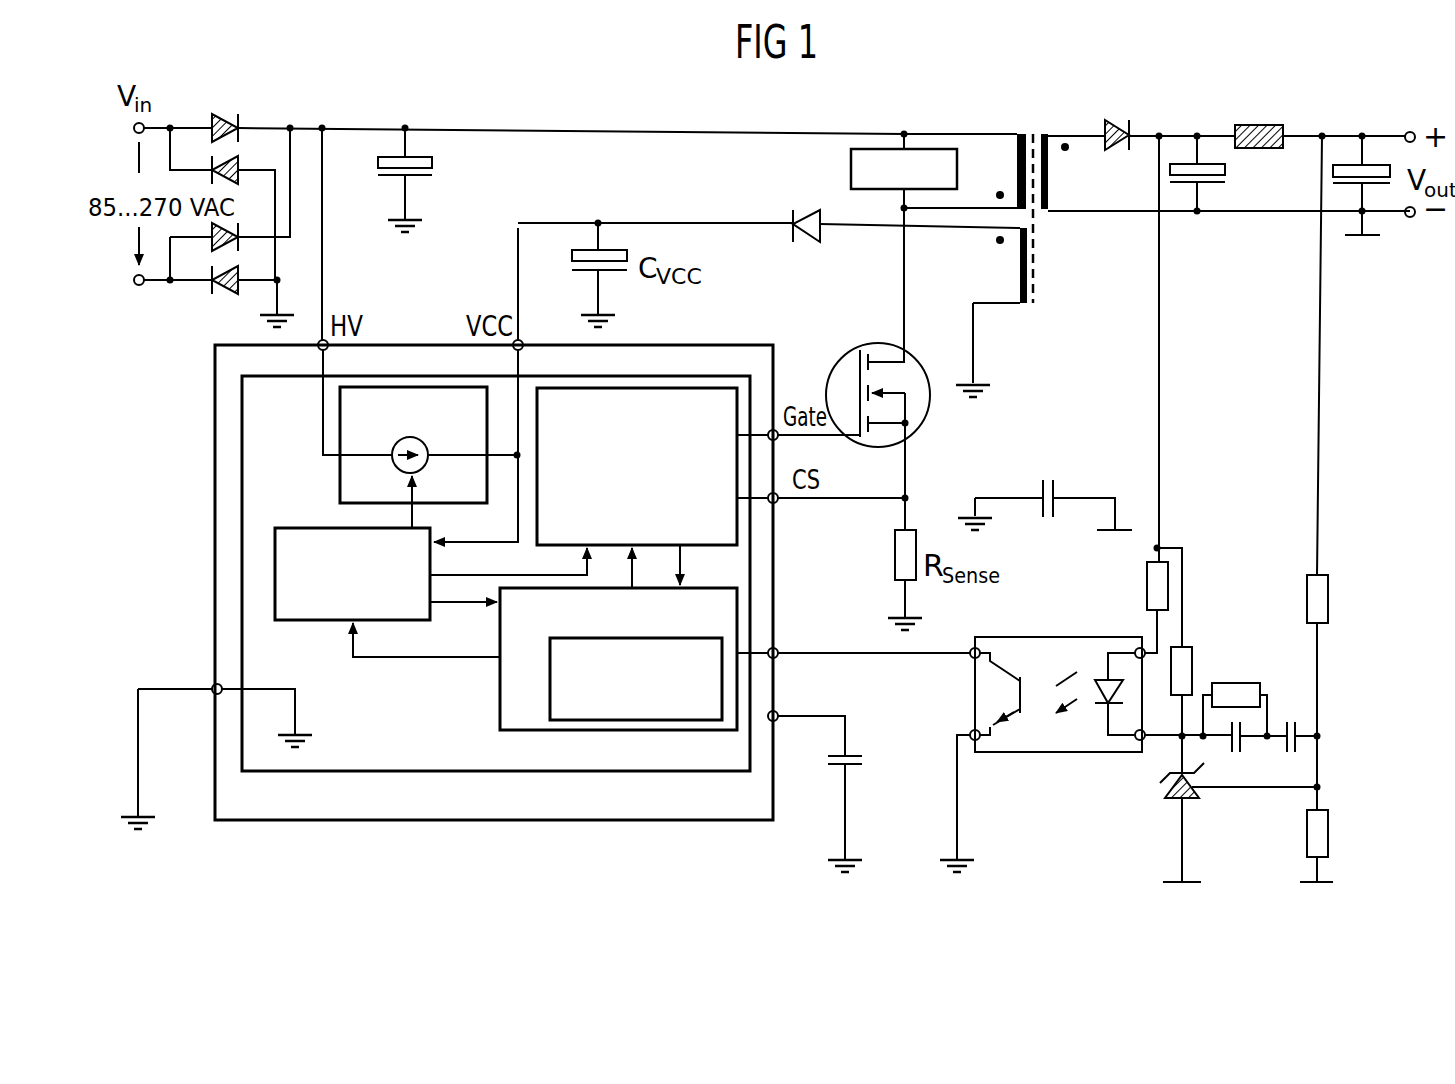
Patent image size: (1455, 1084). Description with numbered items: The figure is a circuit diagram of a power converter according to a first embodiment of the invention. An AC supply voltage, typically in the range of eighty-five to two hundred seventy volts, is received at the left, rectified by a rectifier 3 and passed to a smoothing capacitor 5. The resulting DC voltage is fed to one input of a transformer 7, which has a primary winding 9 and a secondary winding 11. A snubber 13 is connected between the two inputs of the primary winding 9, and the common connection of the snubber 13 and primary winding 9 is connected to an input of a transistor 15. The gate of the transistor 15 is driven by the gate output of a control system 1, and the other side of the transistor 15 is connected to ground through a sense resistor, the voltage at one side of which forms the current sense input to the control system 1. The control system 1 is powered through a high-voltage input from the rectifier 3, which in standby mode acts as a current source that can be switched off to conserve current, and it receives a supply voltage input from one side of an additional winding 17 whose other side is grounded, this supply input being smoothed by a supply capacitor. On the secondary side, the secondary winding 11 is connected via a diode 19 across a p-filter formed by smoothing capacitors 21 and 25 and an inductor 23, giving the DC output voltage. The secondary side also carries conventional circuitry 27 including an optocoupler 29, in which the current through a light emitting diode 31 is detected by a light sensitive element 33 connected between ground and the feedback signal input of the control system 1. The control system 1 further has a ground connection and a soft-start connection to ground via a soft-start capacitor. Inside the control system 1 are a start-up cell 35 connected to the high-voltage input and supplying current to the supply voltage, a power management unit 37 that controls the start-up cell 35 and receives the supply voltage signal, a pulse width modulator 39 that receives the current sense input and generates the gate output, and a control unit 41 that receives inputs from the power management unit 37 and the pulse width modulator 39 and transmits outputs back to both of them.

The control system 1 is at (521, 608).
The rectifier 3 is at (237, 101).
The smoothing capacitor 5 is at (452, 168).
The transformer 7 is at (1157, 222).
The primary winding 9 is at (1017, 151).
The secondary winding 11 is at (1050, 188).
The snubber 13 is at (851, 168).
The transistor 15 is at (913, 432).
The additional winding 17 is at (1020, 271).
The diode 19 is at (1117, 123).
The smoothing capacitor 21 is at (1226, 178).
The inductor 23 is at (1260, 124).
The smoothing capacitor 25 is at (1378, 165).
The circuitry 27 is at (1339, 716).
The optocoupler 29 is at (961, 731).
The light emitting diode 31 is at (1102, 677).
The light sensitive element 33 is at (1020, 700).
The start-up cell 35 is at (340, 478).
The power management unit 37 is at (328, 623).
The pulse width modulator 39 is at (740, 533).
The control unit 41 is at (500, 718).